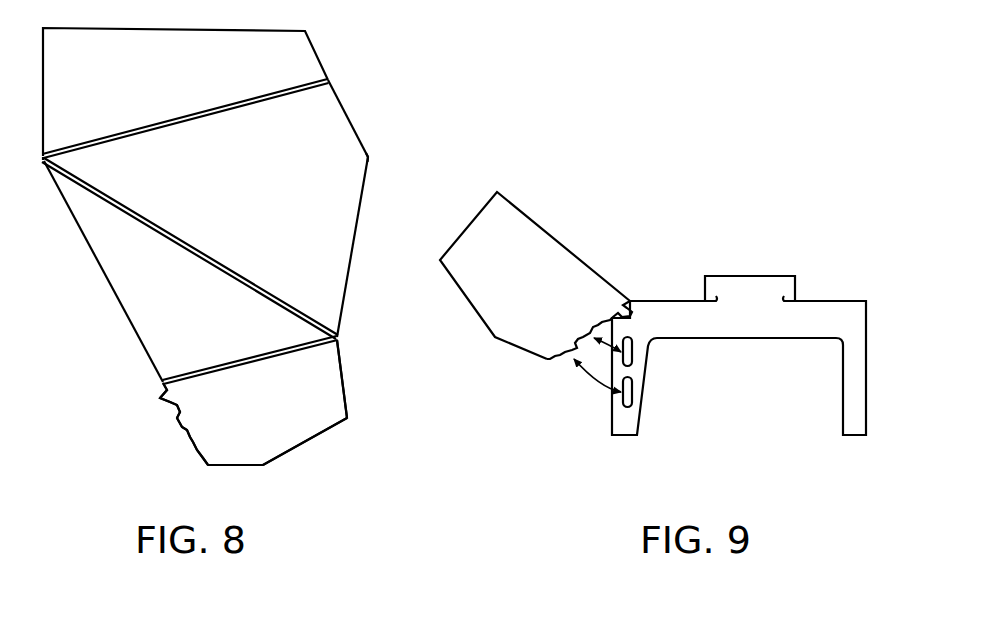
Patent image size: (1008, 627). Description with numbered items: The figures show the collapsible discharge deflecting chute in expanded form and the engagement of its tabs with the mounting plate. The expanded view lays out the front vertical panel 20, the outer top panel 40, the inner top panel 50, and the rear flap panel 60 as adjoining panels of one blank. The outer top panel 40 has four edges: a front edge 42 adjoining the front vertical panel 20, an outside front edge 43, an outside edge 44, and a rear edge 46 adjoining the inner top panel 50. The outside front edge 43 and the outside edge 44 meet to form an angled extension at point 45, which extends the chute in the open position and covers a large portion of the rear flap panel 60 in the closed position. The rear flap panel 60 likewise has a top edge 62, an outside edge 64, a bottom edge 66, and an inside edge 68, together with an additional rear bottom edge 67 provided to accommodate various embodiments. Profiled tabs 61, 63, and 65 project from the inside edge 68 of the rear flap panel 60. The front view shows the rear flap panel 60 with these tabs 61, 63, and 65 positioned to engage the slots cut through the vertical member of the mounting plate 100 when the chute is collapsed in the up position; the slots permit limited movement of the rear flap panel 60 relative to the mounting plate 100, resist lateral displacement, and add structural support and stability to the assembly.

In FIG. 8, the front vertical panel 20 is at (185, 92).
In FIG. 8, the outer top panel 40 is at (159, 187).
In FIG. 8, the front edge 42 is at (204, 116).
In FIG. 8, the outside front edge 43 is at (348, 113).
In FIG. 8, the outside edge 44 is at (358, 252).
In FIG. 8, the point 45 is at (370, 158).
In FIG. 8, the rear edge 46 is at (257, 280).
In FIG. 8, the inner top panel 50 is at (126, 271).
In FIG. 8, the rear flap panel 60 is at (253, 402).
In FIG. 9, the rear flap panel 60 is at (536, 275).
In FIG. 8, the tab 61 is at (158, 400).
In FIG. 8, the top edge 62 is at (267, 360).
In FIG. 8, the tab 63 is at (180, 428).
In FIG. 8, the outside edge 64 is at (346, 390).
In FIG. 8, the tab 65 is at (193, 455).
In FIG. 8, the bottom edge 66 is at (287, 453).
In FIG. 8, the rear bottom edge 67 is at (247, 468).
In FIG. 8, the inside edge 68 is at (162, 386).
In FIG. 9, the mounting plate 100 is at (755, 273).